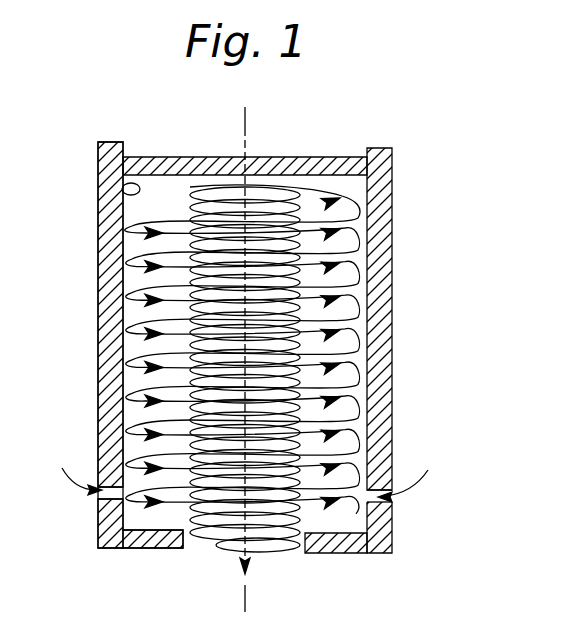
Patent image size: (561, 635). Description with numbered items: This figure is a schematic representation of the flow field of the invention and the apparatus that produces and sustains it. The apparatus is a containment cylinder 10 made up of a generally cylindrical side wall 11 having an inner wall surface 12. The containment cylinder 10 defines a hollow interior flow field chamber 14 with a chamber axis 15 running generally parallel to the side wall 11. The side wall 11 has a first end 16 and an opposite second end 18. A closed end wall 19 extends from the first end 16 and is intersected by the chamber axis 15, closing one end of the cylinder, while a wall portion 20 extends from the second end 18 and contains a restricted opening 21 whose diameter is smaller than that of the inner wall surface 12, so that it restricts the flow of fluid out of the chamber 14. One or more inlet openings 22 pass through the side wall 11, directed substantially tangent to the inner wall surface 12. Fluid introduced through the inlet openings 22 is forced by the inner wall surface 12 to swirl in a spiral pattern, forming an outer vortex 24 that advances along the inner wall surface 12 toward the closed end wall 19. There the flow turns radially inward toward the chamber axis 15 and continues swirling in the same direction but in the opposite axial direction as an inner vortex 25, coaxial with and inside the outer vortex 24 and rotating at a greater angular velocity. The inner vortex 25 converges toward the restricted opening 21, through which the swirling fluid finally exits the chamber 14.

The containment cylinder 10 is at (265, 354).
The side wall 11 is at (375, 357).
The inner wall surface 12 is at (130, 188).
The flow field chamber 14 is at (352, 188).
The chamber axis 15 is at (258, 130).
The first end 16 is at (382, 155).
The second end 18 is at (388, 544).
The closed end wall 19 is at (330, 167).
The wall portion 20 is at (350, 547).
The restricted opening 21 is at (210, 551).
The inlet openings 22 is at (114, 494).
The outer vortex 24 is at (130, 262).
The inner vortex 25 is at (140, 300).